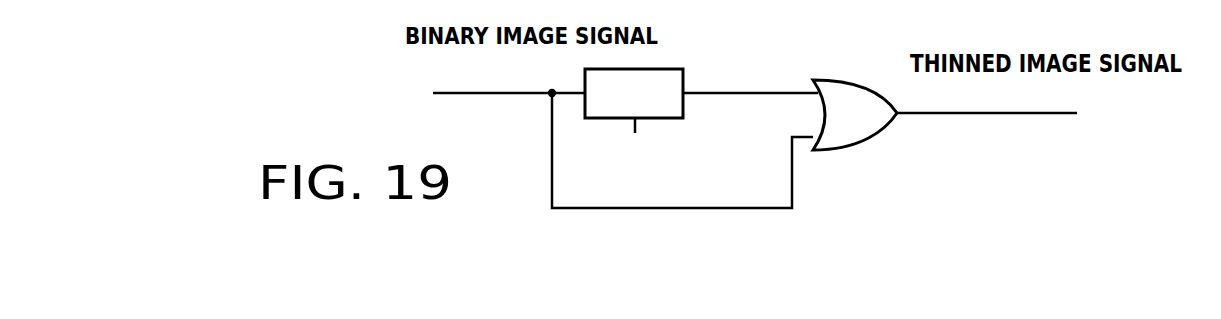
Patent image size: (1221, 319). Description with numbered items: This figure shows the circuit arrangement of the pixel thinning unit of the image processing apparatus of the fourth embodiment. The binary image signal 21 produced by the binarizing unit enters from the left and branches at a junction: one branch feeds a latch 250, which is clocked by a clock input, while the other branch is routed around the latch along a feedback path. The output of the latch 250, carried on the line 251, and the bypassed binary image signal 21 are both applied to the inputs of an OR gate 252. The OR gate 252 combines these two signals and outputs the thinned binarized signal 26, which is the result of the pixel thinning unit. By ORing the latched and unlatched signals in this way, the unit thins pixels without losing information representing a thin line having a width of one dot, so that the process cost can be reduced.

The binary image signal 21 is at (497, 92).
The latch 250 is at (683, 103).
The latch output signal 251 is at (737, 92).
The OR gate 252 is at (847, 80).
The thinned binarized signal 26 is at (1000, 112).